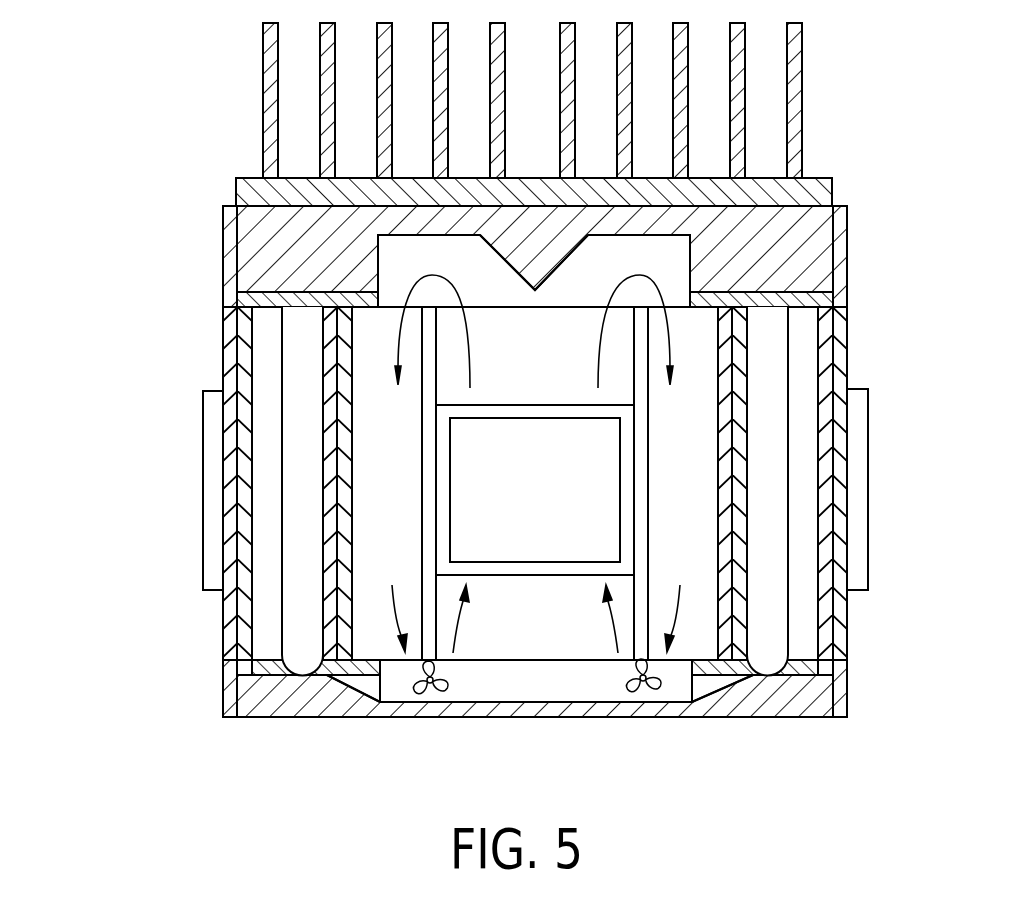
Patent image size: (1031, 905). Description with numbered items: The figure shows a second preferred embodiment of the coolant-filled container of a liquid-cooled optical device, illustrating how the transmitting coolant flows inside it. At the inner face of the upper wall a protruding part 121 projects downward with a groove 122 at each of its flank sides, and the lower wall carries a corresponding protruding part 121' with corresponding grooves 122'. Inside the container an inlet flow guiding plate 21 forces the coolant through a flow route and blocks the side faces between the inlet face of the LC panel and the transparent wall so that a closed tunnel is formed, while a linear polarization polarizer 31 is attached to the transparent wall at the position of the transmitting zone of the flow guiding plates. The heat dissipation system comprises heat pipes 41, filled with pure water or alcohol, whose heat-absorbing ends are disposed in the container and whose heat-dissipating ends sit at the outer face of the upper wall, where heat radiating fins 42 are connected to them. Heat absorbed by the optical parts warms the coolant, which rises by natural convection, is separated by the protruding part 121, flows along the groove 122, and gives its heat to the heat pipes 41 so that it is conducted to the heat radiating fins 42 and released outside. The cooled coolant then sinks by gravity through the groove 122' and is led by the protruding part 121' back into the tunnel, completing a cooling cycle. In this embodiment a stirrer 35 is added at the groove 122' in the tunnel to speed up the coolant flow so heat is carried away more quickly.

The heat radiating fins 42 is at (793, 70).
The protruding part 121 is at (710, 250).
The groove 122 is at (256, 263).
The heat pipe 41 is at (777, 645).
The groove 122' is at (365, 717).
The protruding part 121' is at (540, 731).
The linear polarization polarizer 31 is at (860, 495).
The inlet flow guiding plate 21 is at (643, 650).
The stirrer 35 is at (645, 700).